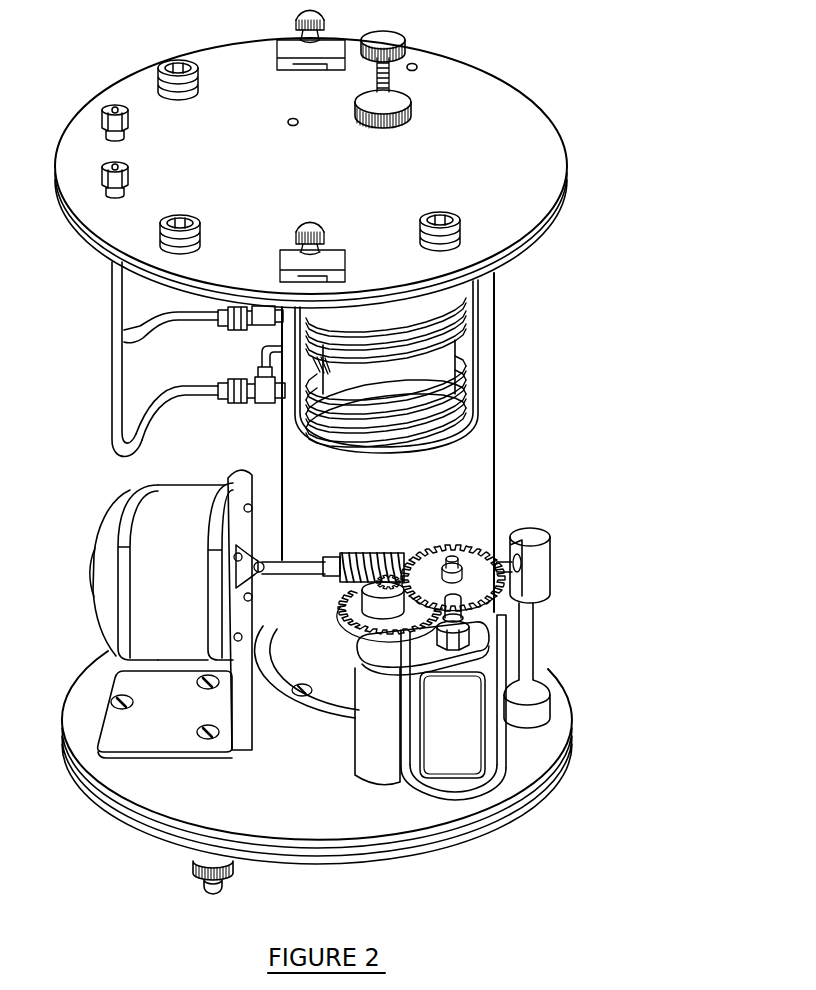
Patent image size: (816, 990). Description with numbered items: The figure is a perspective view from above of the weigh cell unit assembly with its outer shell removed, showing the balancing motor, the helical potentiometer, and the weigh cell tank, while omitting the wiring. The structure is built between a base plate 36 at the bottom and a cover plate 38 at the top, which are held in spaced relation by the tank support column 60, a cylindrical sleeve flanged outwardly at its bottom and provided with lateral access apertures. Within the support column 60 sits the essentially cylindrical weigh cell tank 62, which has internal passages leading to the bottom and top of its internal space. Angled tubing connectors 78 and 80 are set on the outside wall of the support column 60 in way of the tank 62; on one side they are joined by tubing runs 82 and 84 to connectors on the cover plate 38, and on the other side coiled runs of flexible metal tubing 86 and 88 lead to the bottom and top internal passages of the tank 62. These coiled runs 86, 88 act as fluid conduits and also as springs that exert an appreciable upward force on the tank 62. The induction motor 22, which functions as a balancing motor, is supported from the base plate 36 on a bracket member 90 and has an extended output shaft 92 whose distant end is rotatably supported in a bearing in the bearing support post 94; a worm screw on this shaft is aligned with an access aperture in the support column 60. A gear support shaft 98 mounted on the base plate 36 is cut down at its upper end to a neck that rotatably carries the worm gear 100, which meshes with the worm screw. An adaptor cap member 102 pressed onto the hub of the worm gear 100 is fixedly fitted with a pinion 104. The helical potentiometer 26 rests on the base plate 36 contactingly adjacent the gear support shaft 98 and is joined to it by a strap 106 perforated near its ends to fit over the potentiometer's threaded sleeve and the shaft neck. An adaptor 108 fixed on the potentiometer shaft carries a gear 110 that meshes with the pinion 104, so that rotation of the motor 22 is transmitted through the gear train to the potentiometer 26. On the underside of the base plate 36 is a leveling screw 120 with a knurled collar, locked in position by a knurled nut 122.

The induction motor 22 is at (110, 522).
The helical potentiometer 26 is at (465, 735).
The base plate 36 is at (125, 826).
The cover plate 38 is at (470, 63).
The tank support column 60 is at (496, 444).
The weigh cell tank 62 is at (397, 387).
The angled tubing connector 78 is at (264, 403).
The angled tubing connector 80 is at (262, 330).
The tubing run 82 is at (142, 430).
The tubing run 84 is at (148, 338).
The coiled run of flexible metal tubing 86 is at (356, 378).
The coiled run of flexible metal tubing 88 is at (410, 361).
The bracket member 90 is at (152, 752).
The output shaft 92 is at (289, 562).
The bearing support post 94 is at (538, 632).
The gear support shaft 98 is at (388, 777).
The worm gear 100 is at (348, 626).
The adaptor cap member 102 is at (362, 604).
The pinion 104 is at (347, 585).
The strap 106 is at (372, 666).
The adaptor 108 is at (435, 623).
The gear 110 is at (446, 552).
The leveling screw 120 is at (218, 890).
The knurled nut 122 is at (195, 870).